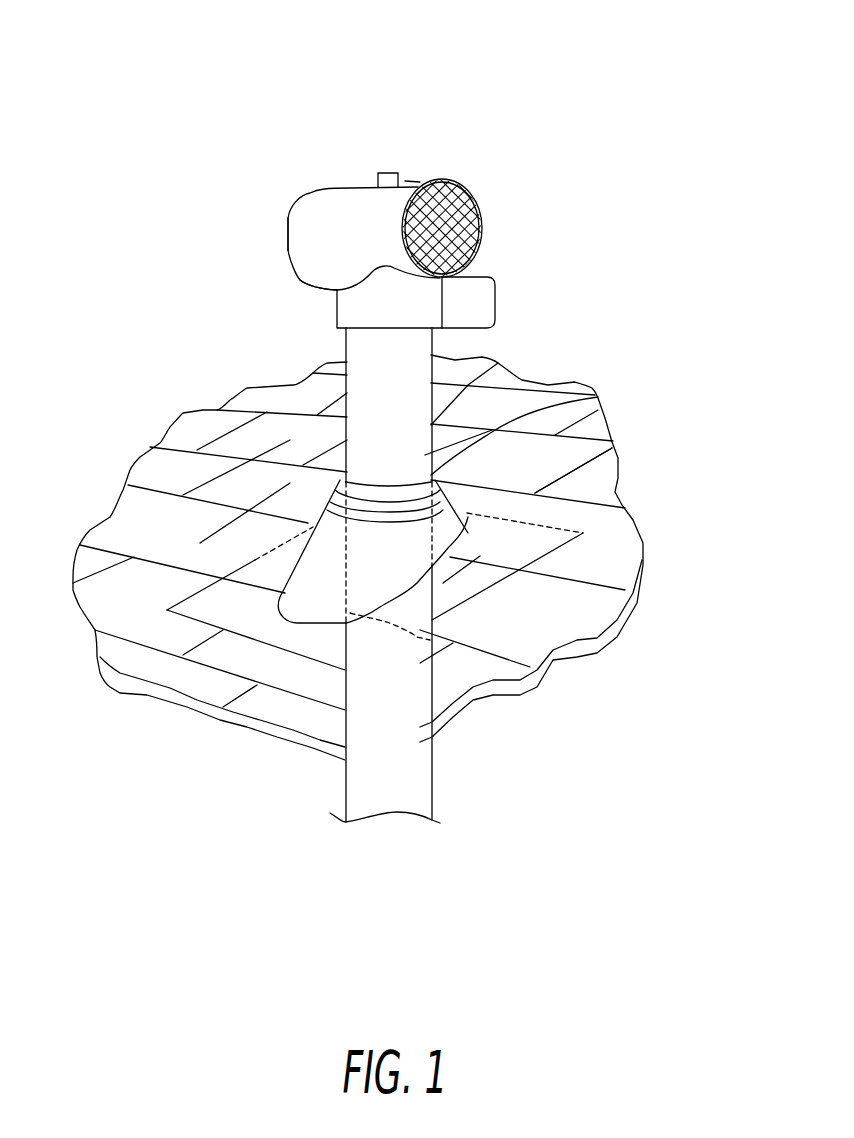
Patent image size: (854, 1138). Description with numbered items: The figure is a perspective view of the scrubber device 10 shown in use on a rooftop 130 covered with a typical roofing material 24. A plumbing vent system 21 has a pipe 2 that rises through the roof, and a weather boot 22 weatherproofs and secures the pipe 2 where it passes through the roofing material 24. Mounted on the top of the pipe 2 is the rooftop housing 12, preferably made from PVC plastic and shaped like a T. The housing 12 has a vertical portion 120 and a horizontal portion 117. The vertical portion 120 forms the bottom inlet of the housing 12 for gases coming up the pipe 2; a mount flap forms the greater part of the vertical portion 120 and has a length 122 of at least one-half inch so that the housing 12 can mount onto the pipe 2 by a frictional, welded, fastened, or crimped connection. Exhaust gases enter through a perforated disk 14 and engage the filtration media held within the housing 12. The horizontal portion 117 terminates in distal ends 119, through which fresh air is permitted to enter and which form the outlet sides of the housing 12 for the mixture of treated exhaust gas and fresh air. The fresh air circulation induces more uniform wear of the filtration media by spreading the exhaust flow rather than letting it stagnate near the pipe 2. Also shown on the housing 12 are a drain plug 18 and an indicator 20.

The scrubber device 10 is at (173, 118).
The rooftop housing 12 is at (317, 240).
The perforated disk 14 is at (470, 223).
The drain plug 18 is at (405, 181).
The indicator 20 is at (378, 172).
The distal ends 119 is at (287, 218).
The horizontal portion 117 is at (323, 265).
The length 122 is at (493, 326).
The vertical portion 120 is at (335, 307).
The plumbing vent system 21 is at (423, 340).
The pipe 2 is at (595, 396).
The weather boot 22 is at (313, 572).
The roofing material 24 is at (600, 570).
The rooftop 130 is at (240, 440).